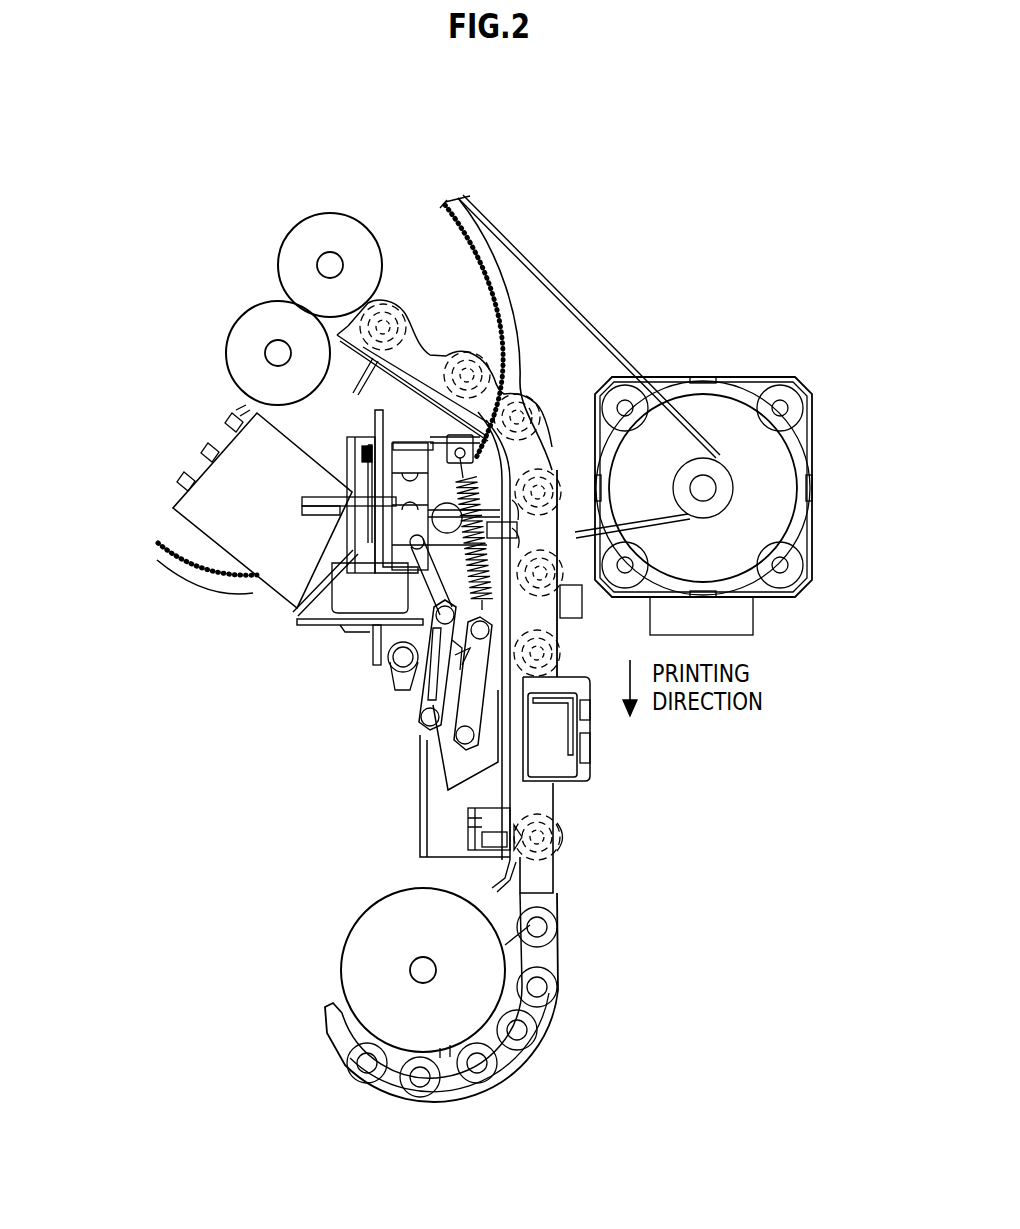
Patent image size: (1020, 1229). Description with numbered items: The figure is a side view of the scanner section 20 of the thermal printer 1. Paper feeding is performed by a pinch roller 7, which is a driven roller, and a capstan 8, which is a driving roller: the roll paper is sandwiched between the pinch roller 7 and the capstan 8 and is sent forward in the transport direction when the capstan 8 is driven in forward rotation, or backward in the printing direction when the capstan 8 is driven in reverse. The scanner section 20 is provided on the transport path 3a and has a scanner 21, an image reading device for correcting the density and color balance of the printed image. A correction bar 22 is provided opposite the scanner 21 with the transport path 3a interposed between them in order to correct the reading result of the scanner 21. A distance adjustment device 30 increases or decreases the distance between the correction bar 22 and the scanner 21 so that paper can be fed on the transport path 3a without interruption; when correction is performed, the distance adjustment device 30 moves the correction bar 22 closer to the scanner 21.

The thermal printer 1 is at (600, 243).
The pinch roller 7 is at (279, 255).
The capstan 8 is at (228, 350).
The transport path 3a is at (573, 876).
The scanner section 20 is at (600, 778).
The scanner 21 is at (556, 735).
The correction bar 22 is at (447, 788).
The distance adjustment device 30 is at (347, 656).